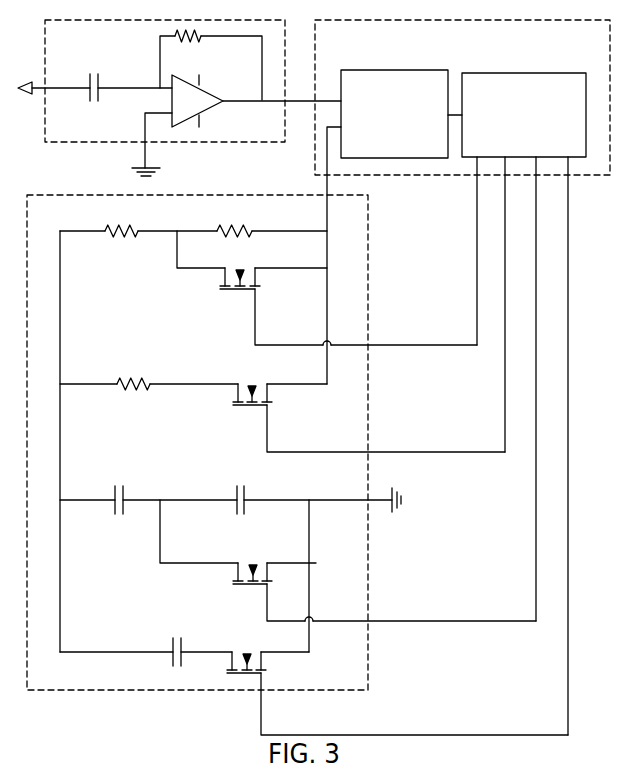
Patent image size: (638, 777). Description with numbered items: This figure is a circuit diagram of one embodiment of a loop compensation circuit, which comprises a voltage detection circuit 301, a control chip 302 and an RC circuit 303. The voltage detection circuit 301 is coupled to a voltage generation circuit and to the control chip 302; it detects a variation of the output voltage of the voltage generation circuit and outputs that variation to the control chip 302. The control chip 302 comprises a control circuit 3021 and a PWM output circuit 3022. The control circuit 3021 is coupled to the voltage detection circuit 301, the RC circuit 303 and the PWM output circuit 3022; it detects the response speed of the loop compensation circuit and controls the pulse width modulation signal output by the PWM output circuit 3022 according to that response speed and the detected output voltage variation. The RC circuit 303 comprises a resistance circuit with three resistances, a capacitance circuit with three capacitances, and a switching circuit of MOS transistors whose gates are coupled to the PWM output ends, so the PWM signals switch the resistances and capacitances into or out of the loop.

The voltage detection circuit 301 is at (151, 98).
The control chip 302 is at (462, 97).
The control circuit 3021 is at (394, 114).
The PWM output circuit 3022 is at (524, 115).
The RC circuit 303 is at (297, 465).